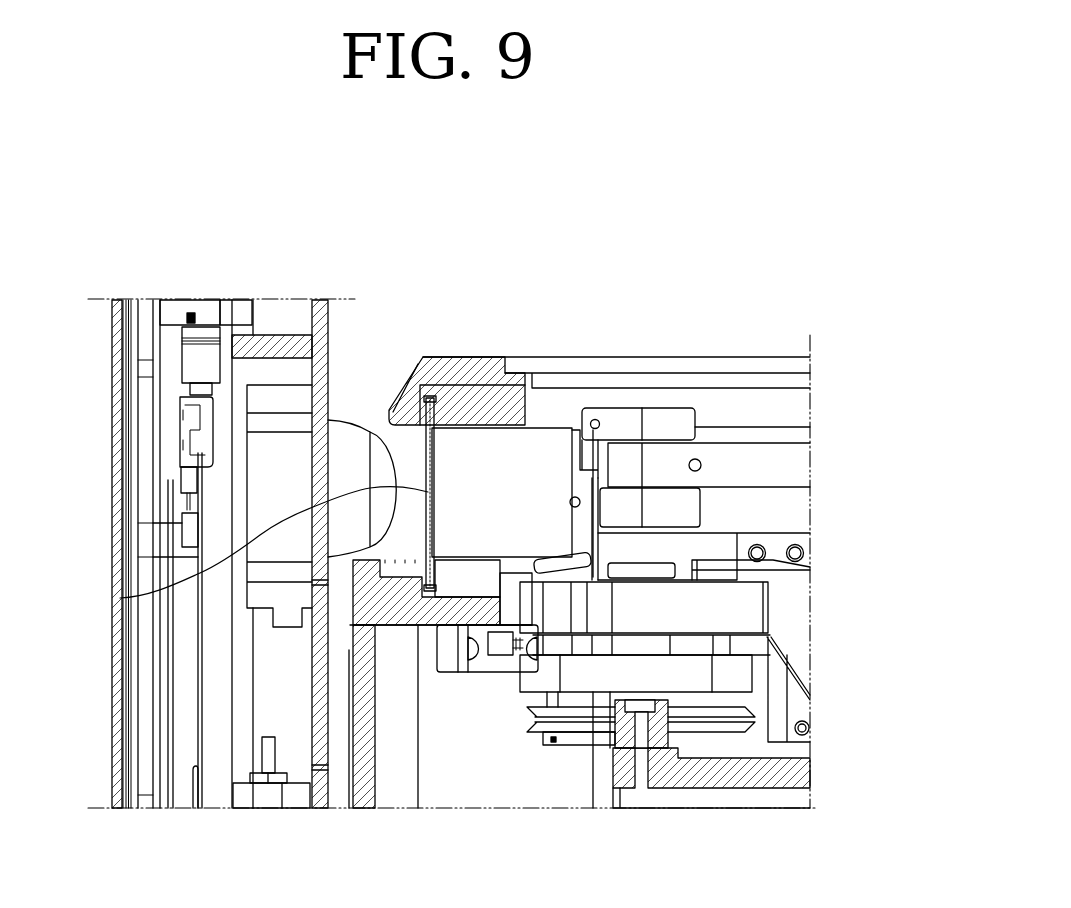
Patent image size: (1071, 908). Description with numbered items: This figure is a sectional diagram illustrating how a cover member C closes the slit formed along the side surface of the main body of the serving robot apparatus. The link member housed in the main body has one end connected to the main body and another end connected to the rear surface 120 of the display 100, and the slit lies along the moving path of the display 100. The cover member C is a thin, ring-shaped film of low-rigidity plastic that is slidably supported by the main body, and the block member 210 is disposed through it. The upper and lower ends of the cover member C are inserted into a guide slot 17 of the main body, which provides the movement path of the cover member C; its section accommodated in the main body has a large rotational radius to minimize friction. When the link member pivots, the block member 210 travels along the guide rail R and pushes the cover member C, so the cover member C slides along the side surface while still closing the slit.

The display 100 is at (280, 310).
The rear surface of the display 120 is at (330, 338).
The guide slot 17 is at (400, 395).
The block member 210 is at (467, 450).
The cover member C is at (120, 598).
The guide rail R is at (623, 740).